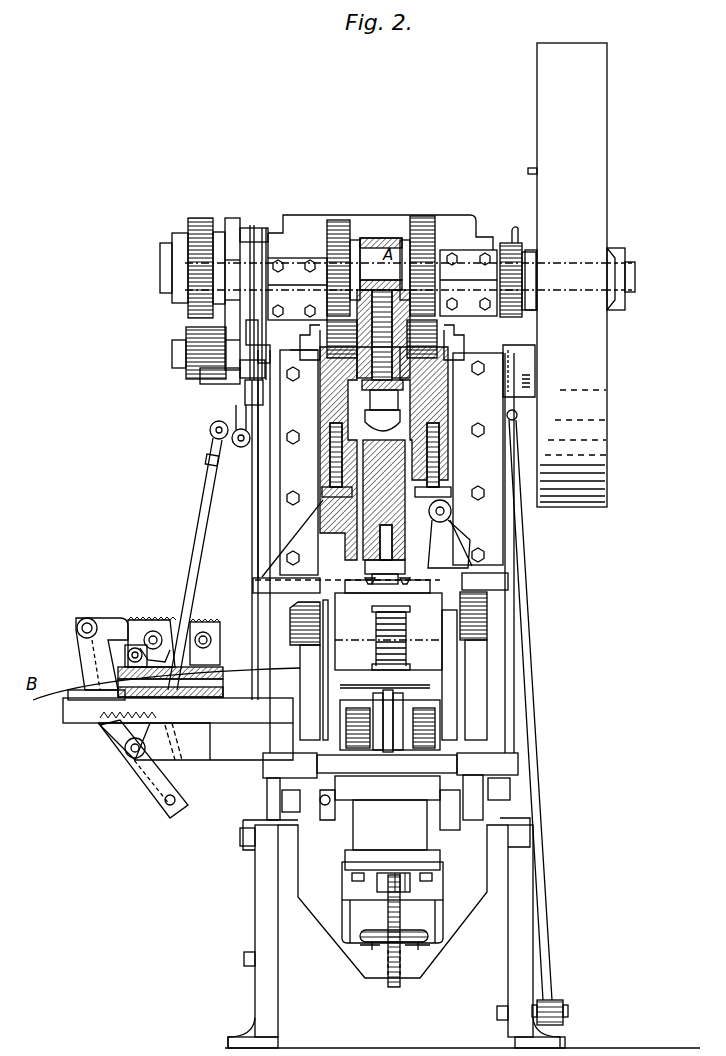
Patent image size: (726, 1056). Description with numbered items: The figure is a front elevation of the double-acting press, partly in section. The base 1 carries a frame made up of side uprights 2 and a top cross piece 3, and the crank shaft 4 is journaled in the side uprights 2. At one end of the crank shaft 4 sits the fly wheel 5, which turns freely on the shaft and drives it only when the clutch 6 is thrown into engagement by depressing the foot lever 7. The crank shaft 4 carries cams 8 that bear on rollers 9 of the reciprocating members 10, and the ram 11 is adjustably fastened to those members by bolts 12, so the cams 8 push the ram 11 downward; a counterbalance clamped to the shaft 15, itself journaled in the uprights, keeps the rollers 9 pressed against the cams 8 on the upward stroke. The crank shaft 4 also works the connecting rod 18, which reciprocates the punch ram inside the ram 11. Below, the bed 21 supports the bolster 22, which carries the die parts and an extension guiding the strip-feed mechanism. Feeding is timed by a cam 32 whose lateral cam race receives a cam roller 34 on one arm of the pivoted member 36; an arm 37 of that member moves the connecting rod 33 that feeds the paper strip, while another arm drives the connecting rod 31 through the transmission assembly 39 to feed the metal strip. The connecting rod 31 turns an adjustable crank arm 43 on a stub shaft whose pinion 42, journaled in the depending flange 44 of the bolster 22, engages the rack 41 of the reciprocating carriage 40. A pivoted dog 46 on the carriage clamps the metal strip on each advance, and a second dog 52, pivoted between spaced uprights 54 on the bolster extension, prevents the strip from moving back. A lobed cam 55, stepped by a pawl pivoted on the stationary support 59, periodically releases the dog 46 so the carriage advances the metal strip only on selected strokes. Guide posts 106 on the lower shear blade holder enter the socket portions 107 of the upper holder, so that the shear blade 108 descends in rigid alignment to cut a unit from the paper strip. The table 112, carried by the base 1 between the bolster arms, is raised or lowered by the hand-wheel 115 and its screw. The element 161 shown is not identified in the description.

The base 1 is at (278, 985).
The side uprights 2 is at (277, 606).
The top cross piece 3 is at (453, 213).
The crank shaft 4 is at (174, 290).
The fly wheel 5 is at (600, 91).
The clutch 6 is at (512, 242).
The foot lever 7 is at (562, 998).
The cams 8 is at (338, 222).
The rollers 9 is at (326, 340).
The reciprocating members 10 is at (330, 405).
The ram 11 is at (450, 534).
The bolts 12 is at (333, 462).
The shaft 15 is at (383, 482).
The connecting rod 18 is at (398, 318).
The bed 21 is at (390, 786).
The bolster 22 is at (248, 745).
The connecting rod 31 is at (210, 530).
The cam 32 is at (232, 218).
The connecting rod 33 is at (250, 490).
The cam roller 34 is at (256, 325).
The member 36 is at (218, 382).
The arm 37 is at (248, 373).
The transmission assembly 39 is at (233, 420).
The reciprocating carriage 40 is at (158, 632).
The rack 41 is at (95, 730).
The pinion 42 is at (178, 738).
The crank arm 43 is at (140, 782).
The depending flange 44 is at (115, 740).
The dog 46 is at (162, 640).
The dog 52 is at (212, 645).
The spaced uprights 54 is at (220, 632).
The cam 55 is at (126, 658).
The stationary support 59 is at (82, 660).
The guide posts 106 is at (300, 676).
The socket portions 107 is at (462, 618).
The shear blade 108 is at (406, 638).
The table 112 is at (412, 883).
The hand-wheel 115 is at (418, 918).
The plate 161 is at (388, 676).